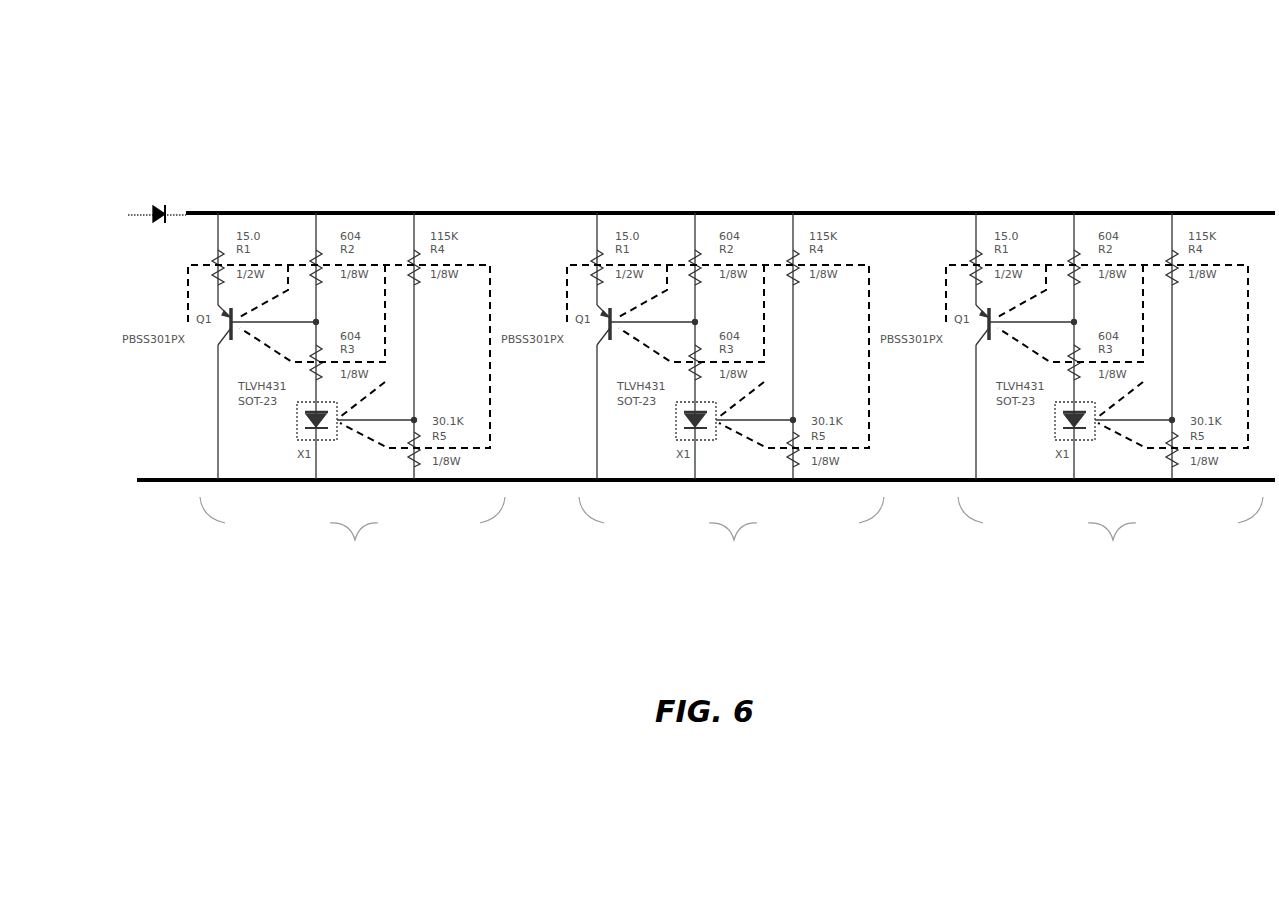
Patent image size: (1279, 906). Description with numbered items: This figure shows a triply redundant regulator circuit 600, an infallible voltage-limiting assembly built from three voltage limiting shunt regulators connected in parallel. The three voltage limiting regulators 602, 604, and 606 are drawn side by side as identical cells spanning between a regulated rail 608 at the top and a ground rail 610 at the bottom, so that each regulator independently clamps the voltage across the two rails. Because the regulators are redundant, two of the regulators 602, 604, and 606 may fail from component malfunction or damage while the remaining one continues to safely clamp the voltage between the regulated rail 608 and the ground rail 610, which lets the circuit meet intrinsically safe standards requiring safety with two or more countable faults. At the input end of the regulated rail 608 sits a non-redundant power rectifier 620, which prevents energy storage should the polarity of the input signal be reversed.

The triply redundant regulator circuit 600 is at (456, 62).
The voltage limiting regulator 602 is at (313, 395).
The voltage limiting regulator 604 is at (692, 395).
The voltage limiting regulator 606 is at (1071, 395).
The regulated rail 608 is at (858, 211).
The ground rail 610 is at (185, 475).
The non-redundant power rectifier 620 is at (158, 212).